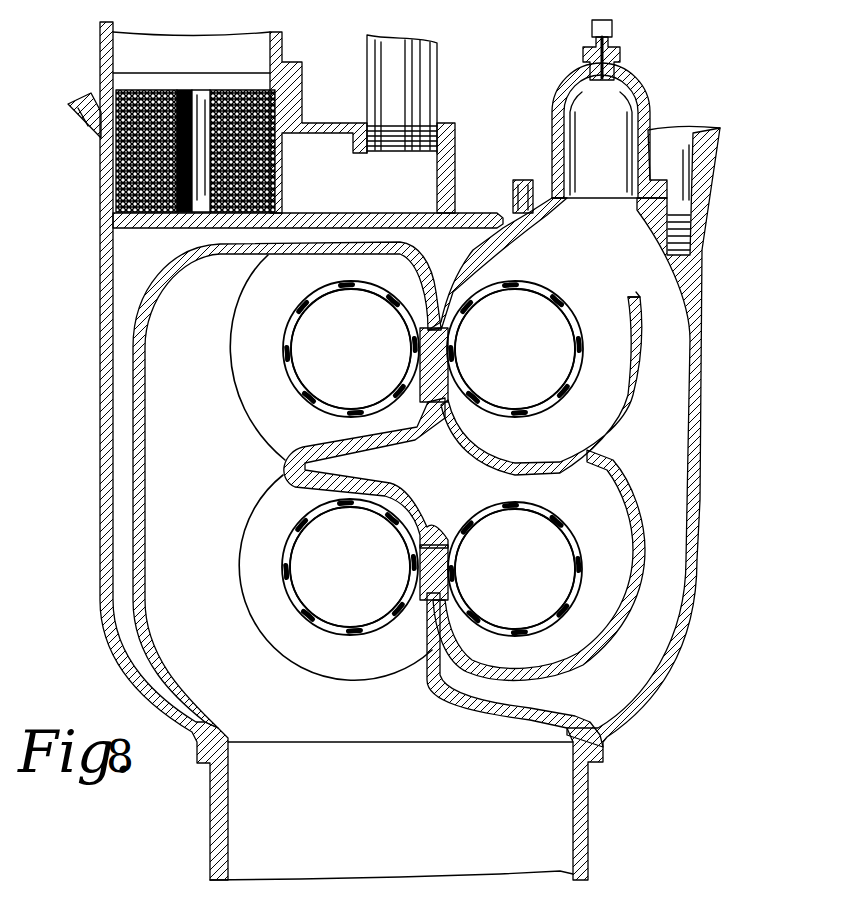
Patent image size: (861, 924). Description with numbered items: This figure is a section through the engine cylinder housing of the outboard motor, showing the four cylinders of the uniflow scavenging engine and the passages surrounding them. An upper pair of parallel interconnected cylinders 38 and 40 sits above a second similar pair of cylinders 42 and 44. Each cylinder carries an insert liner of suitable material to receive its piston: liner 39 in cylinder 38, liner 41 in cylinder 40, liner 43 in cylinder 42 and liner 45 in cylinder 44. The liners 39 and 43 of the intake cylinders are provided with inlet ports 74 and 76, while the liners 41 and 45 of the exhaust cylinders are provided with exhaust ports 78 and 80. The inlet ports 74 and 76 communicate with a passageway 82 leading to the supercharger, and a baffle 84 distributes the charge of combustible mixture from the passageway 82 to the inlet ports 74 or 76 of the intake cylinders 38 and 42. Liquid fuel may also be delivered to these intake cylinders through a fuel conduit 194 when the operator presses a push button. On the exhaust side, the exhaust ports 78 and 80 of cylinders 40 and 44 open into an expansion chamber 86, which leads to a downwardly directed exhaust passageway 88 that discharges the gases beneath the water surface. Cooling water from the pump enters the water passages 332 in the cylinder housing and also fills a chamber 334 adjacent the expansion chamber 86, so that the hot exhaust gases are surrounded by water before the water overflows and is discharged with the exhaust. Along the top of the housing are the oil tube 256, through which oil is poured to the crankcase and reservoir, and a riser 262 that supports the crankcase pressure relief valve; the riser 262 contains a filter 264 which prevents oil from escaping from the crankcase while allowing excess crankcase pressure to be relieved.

The cylinder 38 is at (540, 335).
The liner 39 is at (516, 283).
The cylinder 40 is at (325, 355).
The liner 41 is at (302, 297).
The cylinder 42 is at (545, 598).
The liner 43 is at (560, 525).
The cylinder 44 is at (343, 593).
The liner 45 is at (351, 636).
The inlet port 74 is at (574, 381).
The inlet port 76 is at (576, 549).
The exhaust port 78 is at (290, 327).
The exhaust port 80 is at (290, 540).
The passageway 82 is at (622, 117).
The baffle 84 is at (641, 350).
The expansion chamber 86 is at (168, 503).
The exhaust passageway 88 is at (550, 820).
The fuel conduit 194 is at (613, 28).
The oil tube 256 is at (424, 82).
The riser 262 is at (284, 42).
The filter 264 is at (125, 192).
The water passages 332 is at (668, 616).
The chamber 334 is at (122, 457).